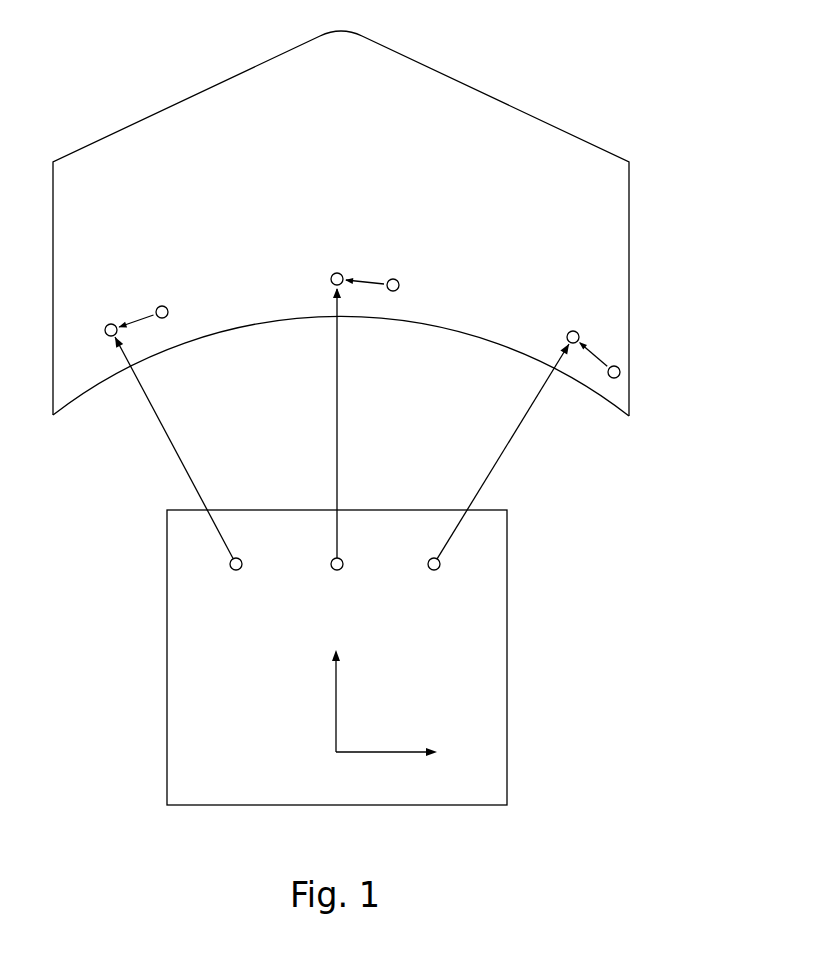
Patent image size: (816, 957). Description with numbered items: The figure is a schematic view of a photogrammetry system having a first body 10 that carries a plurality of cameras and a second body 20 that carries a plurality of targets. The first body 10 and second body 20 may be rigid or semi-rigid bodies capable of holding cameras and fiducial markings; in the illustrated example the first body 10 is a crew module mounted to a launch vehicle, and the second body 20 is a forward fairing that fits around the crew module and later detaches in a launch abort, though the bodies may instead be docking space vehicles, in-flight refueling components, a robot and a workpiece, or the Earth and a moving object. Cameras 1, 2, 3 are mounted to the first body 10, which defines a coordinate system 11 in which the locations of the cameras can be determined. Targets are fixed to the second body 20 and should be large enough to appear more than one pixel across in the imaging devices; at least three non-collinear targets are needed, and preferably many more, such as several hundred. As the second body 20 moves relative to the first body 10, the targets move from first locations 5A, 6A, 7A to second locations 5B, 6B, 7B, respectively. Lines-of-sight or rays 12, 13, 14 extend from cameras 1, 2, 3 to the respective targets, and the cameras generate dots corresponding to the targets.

The camera 1 is at (241, 569).
The camera 2 is at (336, 570).
The camera 3 is at (431, 571).
The first location 5A is at (170, 312).
The second location 5B is at (108, 325).
The first location 6A is at (398, 281).
The second location 6B is at (333, 273).
The first location 7A is at (621, 376).
The second location 7B is at (574, 330).
The first body 10 is at (513, 680).
The coordinate system 11 is at (336, 700).
The ray 12 is at (190, 480).
The ray 13 is at (337, 465).
The ray 14 is at (485, 480).
The second body 20 is at (629, 287).